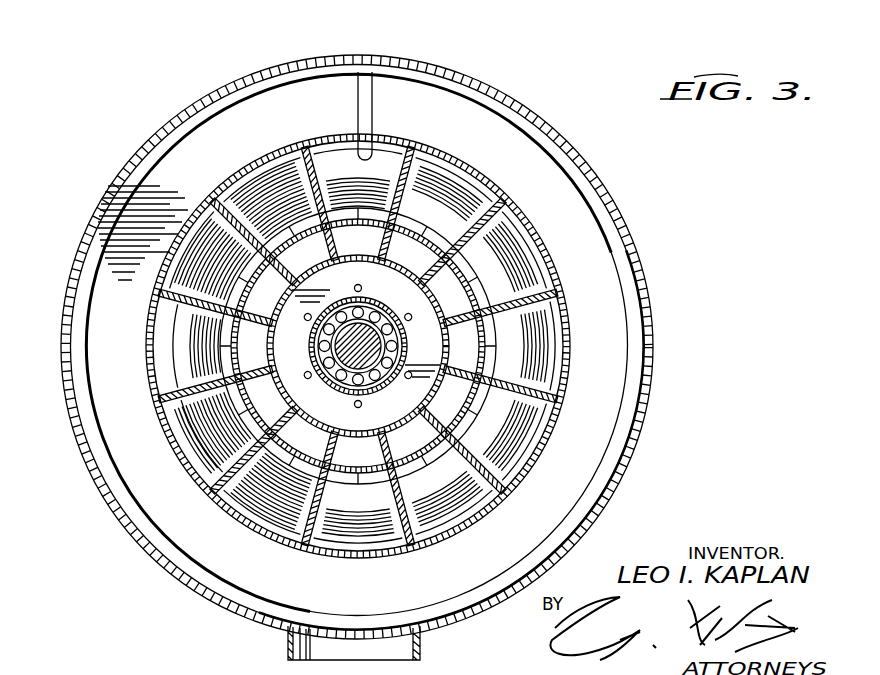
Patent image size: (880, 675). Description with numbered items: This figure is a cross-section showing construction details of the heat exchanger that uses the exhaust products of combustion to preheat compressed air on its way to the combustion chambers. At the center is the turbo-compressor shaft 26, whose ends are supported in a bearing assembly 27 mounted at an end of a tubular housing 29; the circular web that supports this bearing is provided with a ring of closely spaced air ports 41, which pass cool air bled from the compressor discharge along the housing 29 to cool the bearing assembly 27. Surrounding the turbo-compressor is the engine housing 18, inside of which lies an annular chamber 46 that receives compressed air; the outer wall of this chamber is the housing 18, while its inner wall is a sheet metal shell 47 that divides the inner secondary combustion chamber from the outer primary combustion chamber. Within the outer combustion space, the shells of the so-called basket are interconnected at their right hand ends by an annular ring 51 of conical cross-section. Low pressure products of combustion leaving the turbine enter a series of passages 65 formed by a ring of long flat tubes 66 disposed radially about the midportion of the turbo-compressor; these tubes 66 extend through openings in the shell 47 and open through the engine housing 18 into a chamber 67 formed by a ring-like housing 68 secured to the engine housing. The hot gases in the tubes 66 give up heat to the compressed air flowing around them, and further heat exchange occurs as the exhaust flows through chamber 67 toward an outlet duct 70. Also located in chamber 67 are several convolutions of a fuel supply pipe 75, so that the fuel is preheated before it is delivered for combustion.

The engine housing 18 is at (478, 167).
The shaft 26 is at (342, 387).
The bearing assembly 27 is at (402, 343).
The tubular housing 29 is at (303, 338).
The air ports 41 is at (412, 317).
The annular chamber 46 is at (360, 348).
The sheet metal shell 47 is at (421, 226).
The annular ring 51 is at (545, 335).
The passages 65 is at (420, 143).
The flat tubes 66 is at (495, 187).
The chamber 67 is at (357, 345).
The ring-like housing 68 is at (90, 240).
The outlet duct 70 is at (421, 645).
The fuel supply pipe 75 is at (360, 102).